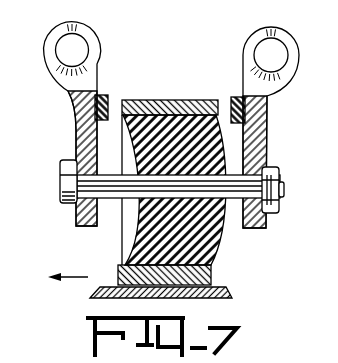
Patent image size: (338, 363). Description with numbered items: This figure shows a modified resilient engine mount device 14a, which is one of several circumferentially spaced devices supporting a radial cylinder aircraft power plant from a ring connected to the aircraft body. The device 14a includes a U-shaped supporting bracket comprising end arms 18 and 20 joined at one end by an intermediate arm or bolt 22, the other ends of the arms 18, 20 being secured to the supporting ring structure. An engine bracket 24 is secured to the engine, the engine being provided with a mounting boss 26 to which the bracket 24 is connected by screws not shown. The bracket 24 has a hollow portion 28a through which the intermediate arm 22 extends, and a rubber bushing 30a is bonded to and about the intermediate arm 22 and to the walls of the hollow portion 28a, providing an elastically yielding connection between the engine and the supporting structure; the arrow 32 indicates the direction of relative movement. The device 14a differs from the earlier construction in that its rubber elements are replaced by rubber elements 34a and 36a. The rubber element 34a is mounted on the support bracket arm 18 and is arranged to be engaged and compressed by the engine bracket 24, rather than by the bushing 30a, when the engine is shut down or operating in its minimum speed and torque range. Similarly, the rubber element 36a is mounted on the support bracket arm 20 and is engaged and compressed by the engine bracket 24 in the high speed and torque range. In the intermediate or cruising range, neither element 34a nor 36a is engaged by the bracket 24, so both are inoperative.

The resilient engine mount device 14a is at (191, 79).
The end arm 18 is at (273, 84).
The end arm 20 is at (68, 88).
The intermediate arm or bolt 22 is at (232, 195).
The engine bracket 24 is at (143, 100).
The mounting boss 26 is at (216, 286).
The spacer sleeve 28a is at (116, 119).
The body side surface 30a is at (138, 231).
The direction of motion arrow 32 is at (72, 277).
The rubber element 34a is at (241, 97).
The rubber element 36a is at (102, 93).